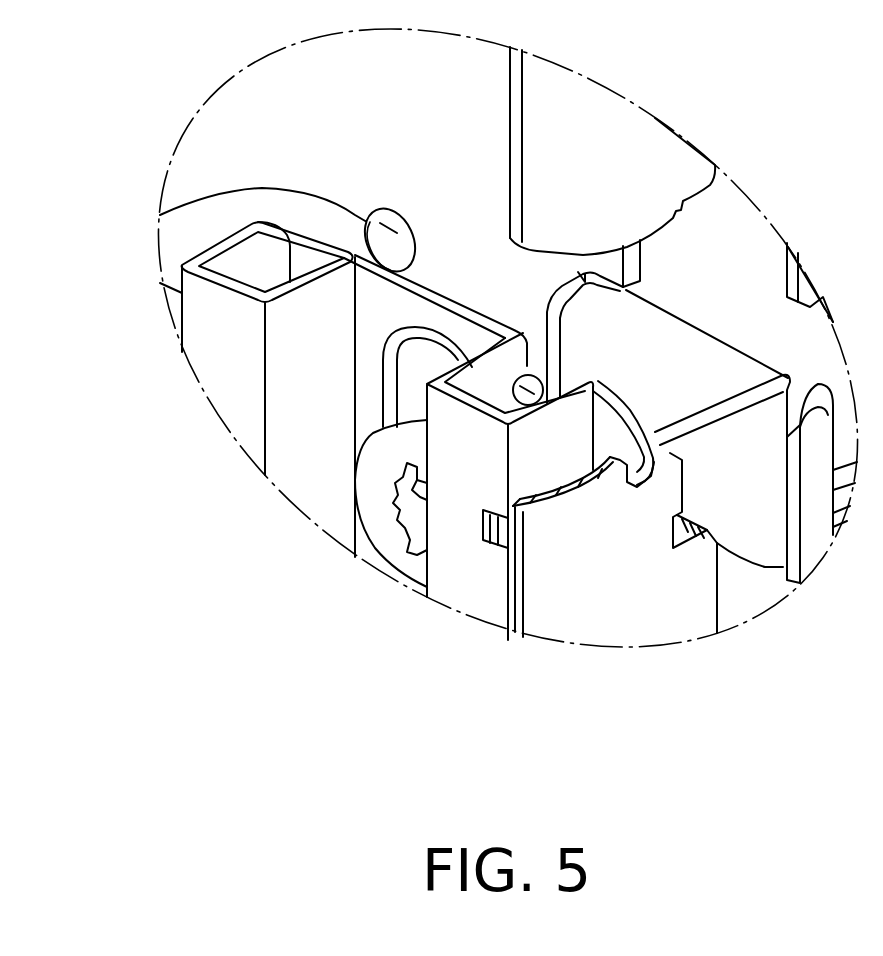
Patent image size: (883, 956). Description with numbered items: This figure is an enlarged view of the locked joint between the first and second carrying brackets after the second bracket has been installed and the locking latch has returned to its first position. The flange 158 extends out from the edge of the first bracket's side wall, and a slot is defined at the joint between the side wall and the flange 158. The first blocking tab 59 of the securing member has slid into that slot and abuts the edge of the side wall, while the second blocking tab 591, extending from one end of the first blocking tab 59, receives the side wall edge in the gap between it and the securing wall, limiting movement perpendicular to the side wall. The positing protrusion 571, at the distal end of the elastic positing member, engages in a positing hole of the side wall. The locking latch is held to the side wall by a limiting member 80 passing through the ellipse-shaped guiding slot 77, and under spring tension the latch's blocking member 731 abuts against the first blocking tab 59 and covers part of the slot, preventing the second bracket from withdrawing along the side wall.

The positing protrusion 571 is at (170, 211).
The flange 158 is at (647, 167).
The first blocking tab 59 is at (598, 352).
The guiding slot 77 is at (413, 363).
The limiting member 80 is at (392, 528).
The second blocking tab 591 is at (528, 388).
The blocking member 731 is at (547, 458).